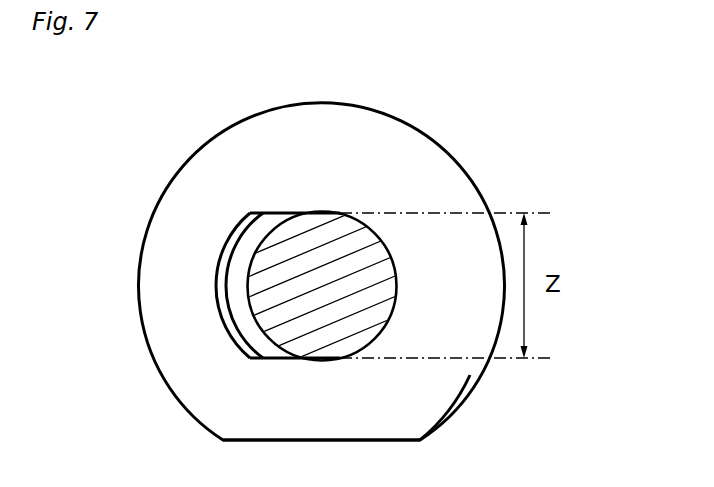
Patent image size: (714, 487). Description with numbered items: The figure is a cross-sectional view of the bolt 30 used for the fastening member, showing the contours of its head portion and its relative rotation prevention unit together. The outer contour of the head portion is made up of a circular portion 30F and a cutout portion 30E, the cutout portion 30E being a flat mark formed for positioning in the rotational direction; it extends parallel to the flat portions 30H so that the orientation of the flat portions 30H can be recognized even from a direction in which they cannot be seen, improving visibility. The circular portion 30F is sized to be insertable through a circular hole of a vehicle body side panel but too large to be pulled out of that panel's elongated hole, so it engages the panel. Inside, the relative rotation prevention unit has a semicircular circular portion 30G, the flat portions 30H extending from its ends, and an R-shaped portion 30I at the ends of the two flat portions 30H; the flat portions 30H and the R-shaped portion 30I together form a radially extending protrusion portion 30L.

The bolt 30 is at (131, 139).
The cutout portion 30E is at (317, 440).
The circular portion 30F is at (453, 416).
The semicircular circular portion 30G is at (380, 220).
The flat portions 30H is at (277, 212).
The R-shaped portion 30I is at (216, 284).
The protrusion portion 30L is at (230, 248).